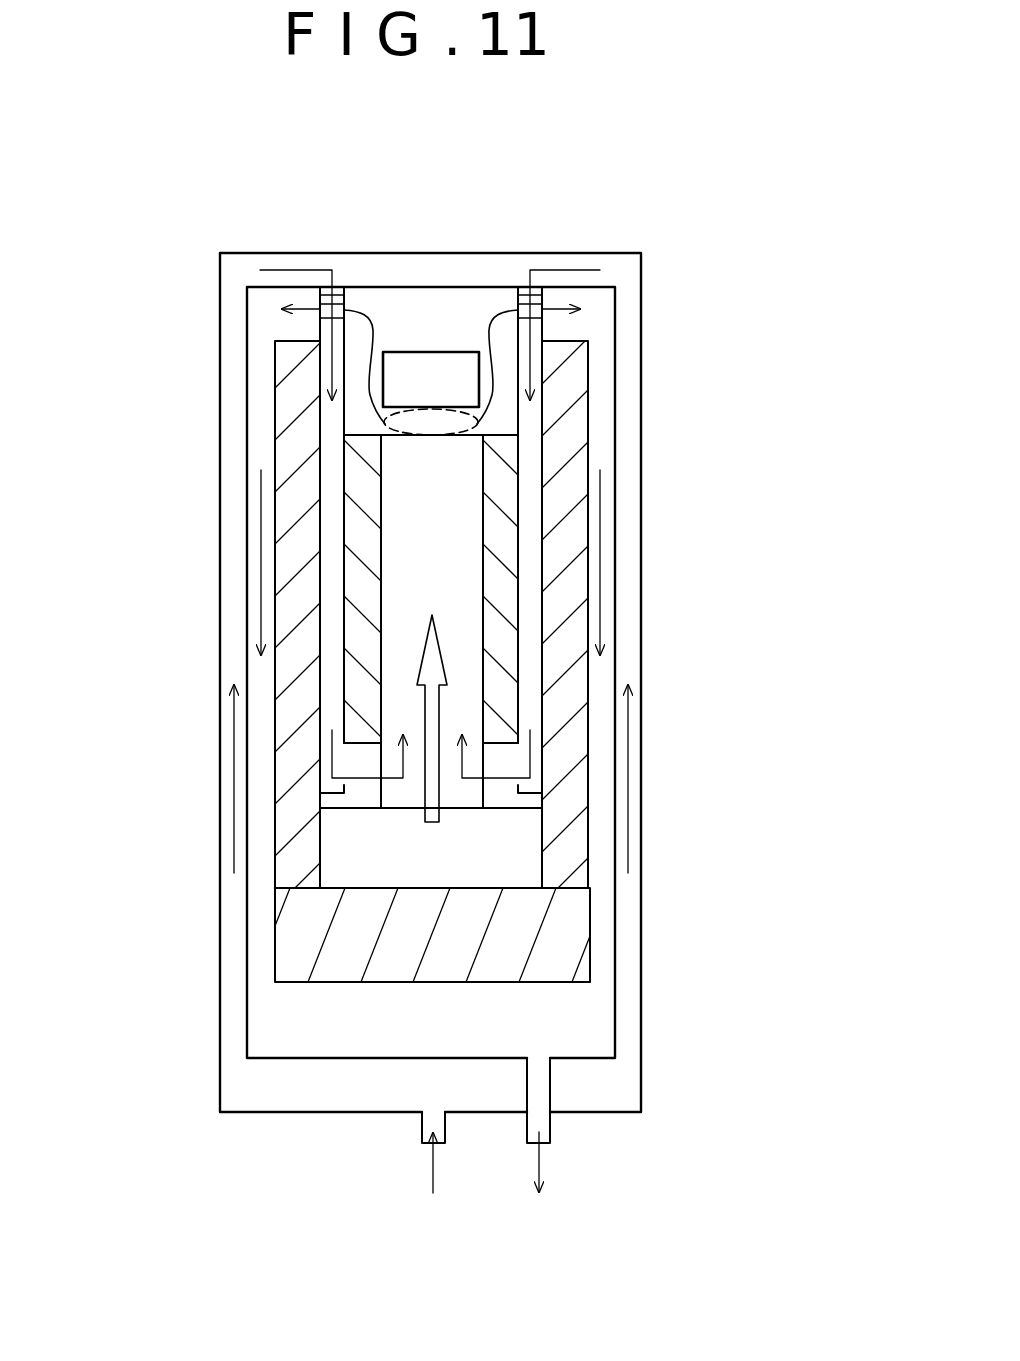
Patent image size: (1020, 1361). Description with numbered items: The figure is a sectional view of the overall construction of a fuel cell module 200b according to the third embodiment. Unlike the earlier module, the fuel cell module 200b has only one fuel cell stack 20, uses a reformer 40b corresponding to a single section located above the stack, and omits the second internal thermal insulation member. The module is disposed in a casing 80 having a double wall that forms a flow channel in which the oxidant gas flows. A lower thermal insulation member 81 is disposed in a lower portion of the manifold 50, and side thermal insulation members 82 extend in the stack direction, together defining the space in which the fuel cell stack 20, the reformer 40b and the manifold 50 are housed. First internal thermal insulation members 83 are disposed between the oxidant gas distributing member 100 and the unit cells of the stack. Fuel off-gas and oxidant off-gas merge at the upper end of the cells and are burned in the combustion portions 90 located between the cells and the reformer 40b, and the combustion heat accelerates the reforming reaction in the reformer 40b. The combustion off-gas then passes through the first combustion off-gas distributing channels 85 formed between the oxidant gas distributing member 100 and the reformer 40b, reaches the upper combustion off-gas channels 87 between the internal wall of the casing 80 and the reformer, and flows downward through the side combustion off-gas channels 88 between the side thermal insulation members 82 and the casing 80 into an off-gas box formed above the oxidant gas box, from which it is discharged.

The fuel cell module 200b is at (634, 212).
The fuel cell stack 20 is at (372, 473).
The reformer 40b is at (456, 352).
The manifold 50 is at (522, 866).
The casing 80 is at (221, 1068).
The lower thermal insulation member 81 is at (288, 933).
The side thermal insulation members 82 is at (293, 553).
The first internal thermal insulation members 83 is at (367, 543).
The first combustion off-gas distributing channels 85 is at (393, 352).
The upper combustion off-gas channels 87 is at (440, 312).
The side combustion off-gas channels 88 is at (258, 413).
The combustion portions 90 is at (398, 420).
The oxidant gas distributing member 100 is at (321, 330).